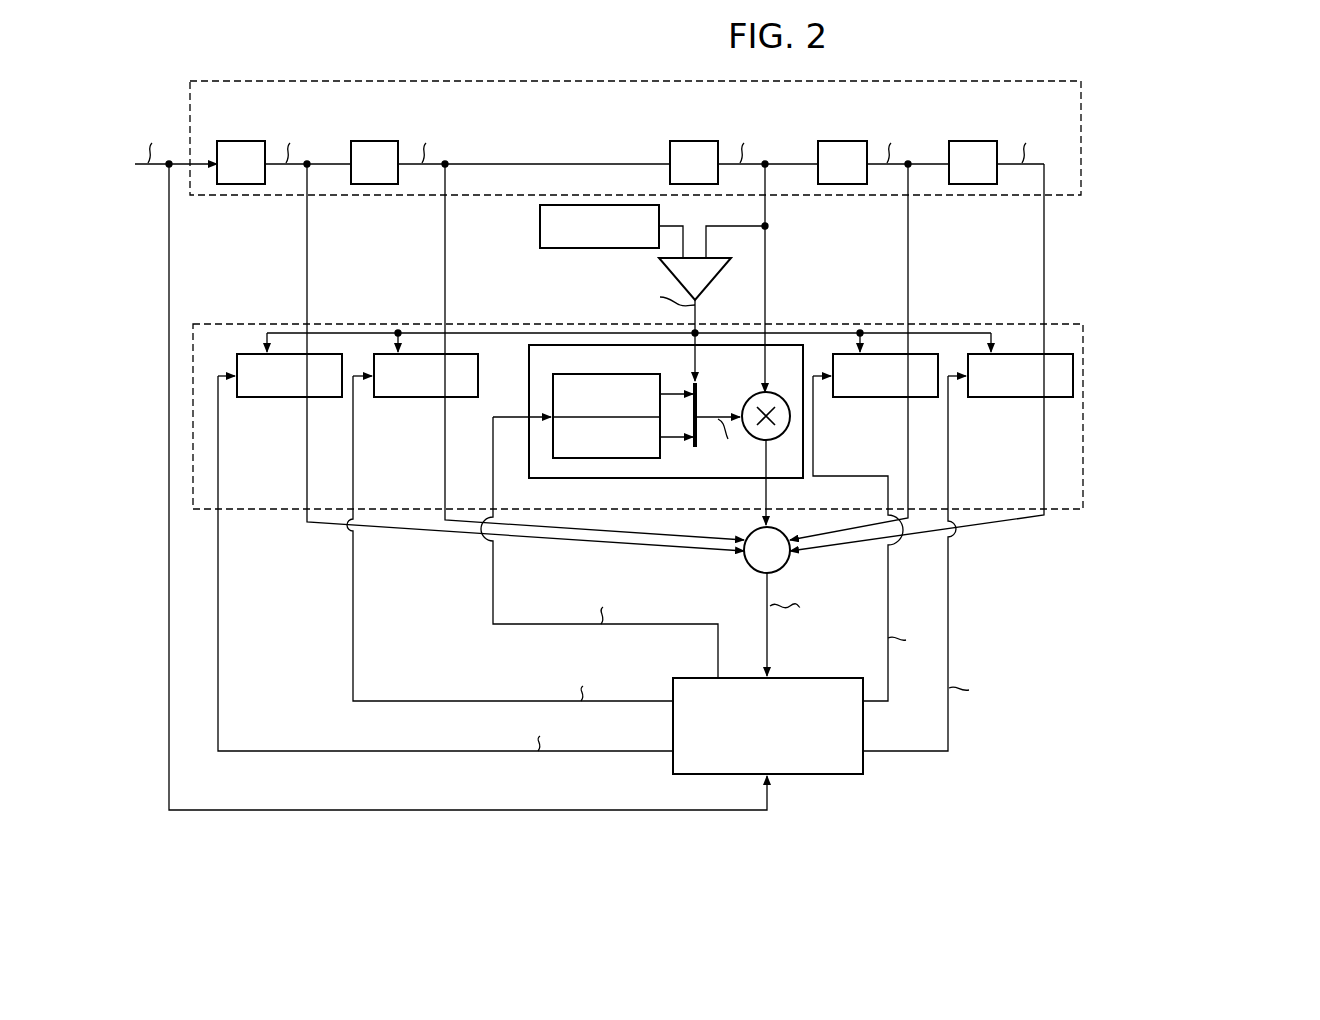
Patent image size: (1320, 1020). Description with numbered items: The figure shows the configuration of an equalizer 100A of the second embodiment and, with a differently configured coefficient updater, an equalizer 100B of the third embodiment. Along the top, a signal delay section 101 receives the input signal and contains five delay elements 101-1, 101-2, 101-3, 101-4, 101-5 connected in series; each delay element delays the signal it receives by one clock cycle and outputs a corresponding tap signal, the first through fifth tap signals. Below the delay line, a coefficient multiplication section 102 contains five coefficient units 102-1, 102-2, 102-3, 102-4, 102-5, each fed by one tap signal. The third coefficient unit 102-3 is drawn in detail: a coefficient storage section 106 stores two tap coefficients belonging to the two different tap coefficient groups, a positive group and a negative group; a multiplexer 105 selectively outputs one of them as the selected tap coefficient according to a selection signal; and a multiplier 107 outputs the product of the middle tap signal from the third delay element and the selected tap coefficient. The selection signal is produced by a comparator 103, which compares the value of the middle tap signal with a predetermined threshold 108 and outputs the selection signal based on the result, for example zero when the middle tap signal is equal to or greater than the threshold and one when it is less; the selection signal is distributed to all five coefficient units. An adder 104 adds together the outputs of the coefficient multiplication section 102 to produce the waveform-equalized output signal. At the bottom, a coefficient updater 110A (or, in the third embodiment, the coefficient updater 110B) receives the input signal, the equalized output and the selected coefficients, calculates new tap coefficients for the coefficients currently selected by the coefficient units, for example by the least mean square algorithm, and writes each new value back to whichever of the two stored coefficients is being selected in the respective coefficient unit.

The equalizer 100A is at (721, 449).
The equalizer 100B is at (1308, 104).
The signal delay section 101 is at (1081, 130).
The delay element 101-1 is at (242, 141).
The delay element 101-2 is at (376, 141).
The delay element 101-3 is at (696, 141).
The delay element 101-4 is at (844, 141).
The delay element 101-5 is at (974, 141).
The coefficient multiplication section 102 is at (1083, 363).
The coefficient unit 102-1 is at (281, 398).
The coefficient unit 102-2 is at (418, 398).
The coefficient unit 102-3 is at (654, 478).
The coefficient unit 102-4 is at (878, 398).
The coefficient unit 102-5 is at (1013, 398).
The comparator 103 is at (716, 278).
The adder 104 is at (750, 569).
The multiplexer 105 is at (698, 430).
The coefficient storage section 106 is at (568, 374).
The multiplier 107 is at (755, 396).
The threshold 108 is at (540, 228).
The coefficient updater 110A is at (792, 747).
The coefficient updater 110B is at (813, 776).